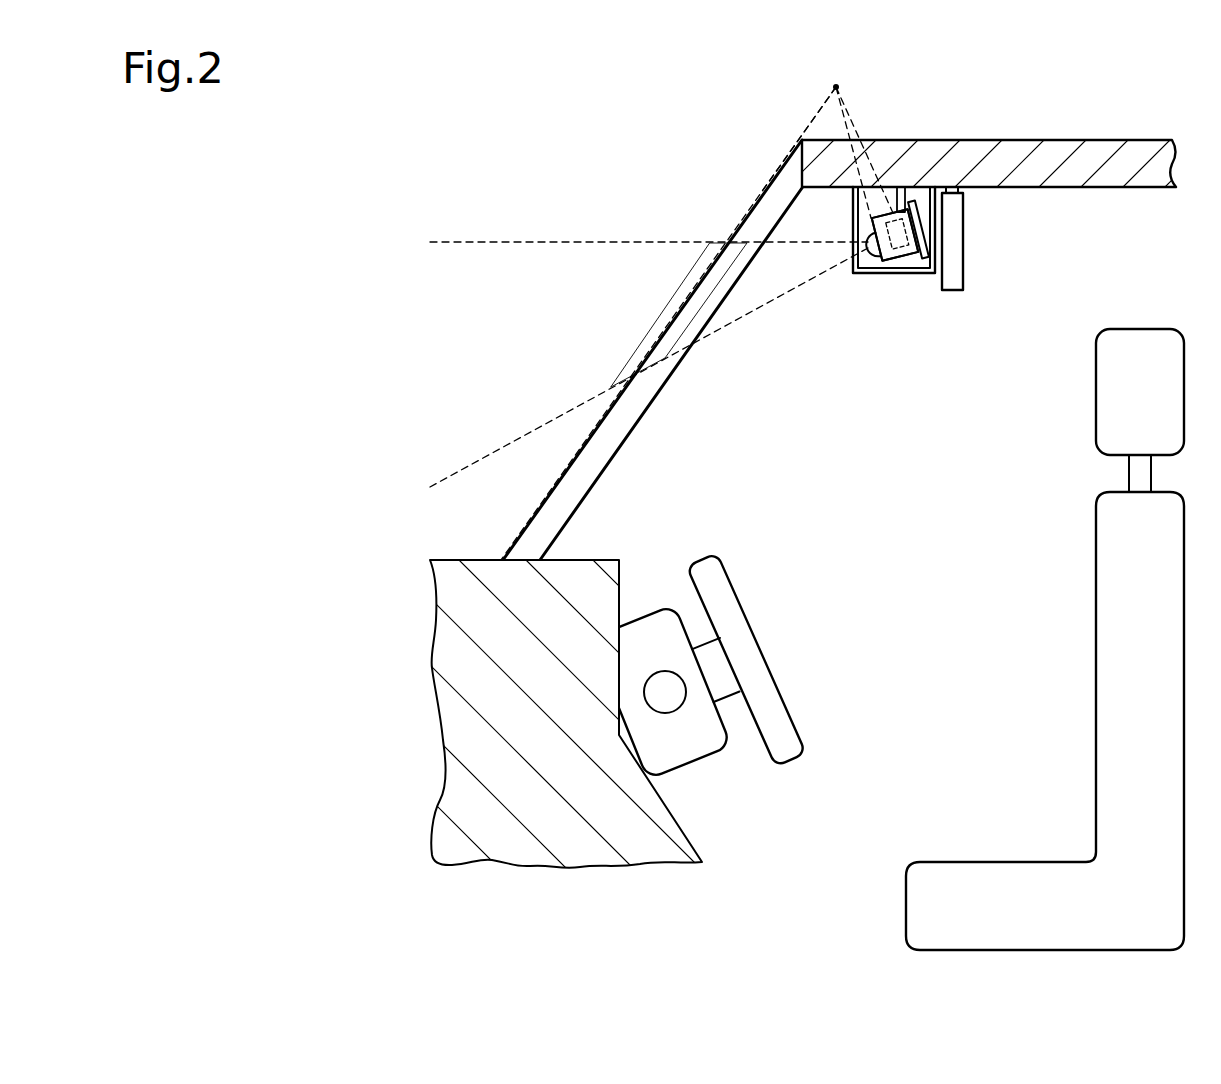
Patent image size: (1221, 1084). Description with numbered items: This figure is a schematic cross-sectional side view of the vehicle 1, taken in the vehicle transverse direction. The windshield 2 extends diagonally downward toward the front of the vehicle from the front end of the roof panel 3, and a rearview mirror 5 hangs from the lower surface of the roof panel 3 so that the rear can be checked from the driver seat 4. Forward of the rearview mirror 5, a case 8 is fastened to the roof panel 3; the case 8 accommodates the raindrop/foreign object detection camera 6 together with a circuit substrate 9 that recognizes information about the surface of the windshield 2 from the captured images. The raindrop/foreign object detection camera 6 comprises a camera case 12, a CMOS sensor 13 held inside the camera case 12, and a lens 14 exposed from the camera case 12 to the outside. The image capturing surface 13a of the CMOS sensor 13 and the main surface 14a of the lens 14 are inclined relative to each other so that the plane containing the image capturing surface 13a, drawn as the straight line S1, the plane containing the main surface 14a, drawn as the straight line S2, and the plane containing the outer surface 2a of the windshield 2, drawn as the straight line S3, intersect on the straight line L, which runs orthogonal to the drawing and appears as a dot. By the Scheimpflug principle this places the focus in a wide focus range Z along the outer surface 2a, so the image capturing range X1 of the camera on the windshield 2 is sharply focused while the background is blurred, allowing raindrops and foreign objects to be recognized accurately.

The vehicle 1 is at (575, 146).
The windshield 2 is at (648, 403).
The outer surface of the windshield 2a is at (690, 298).
The roof panel 3 is at (1099, 150).
The driver seat 4 is at (1105, 653).
The rearview mirror 5 is at (962, 243).
The raindrop/foreign object detection camera 6 is at (870, 216).
The case 8 is at (926, 276).
The circuit substrate 9 is at (924, 223).
The camera case 12 is at (890, 272).
The CMOS sensor 13 is at (919, 200).
The image capturing surface 13a is at (905, 268).
The lens 14 is at (873, 237).
The main surface 14a is at (866, 254).
The straight line L is at (836, 87).
The straight line S1 is at (869, 172).
The straight line S2 is at (860, 136).
The straight line S3 is at (827, 102).
The image capturing range X1 is at (583, 245).
The focus range Z is at (640, 347).